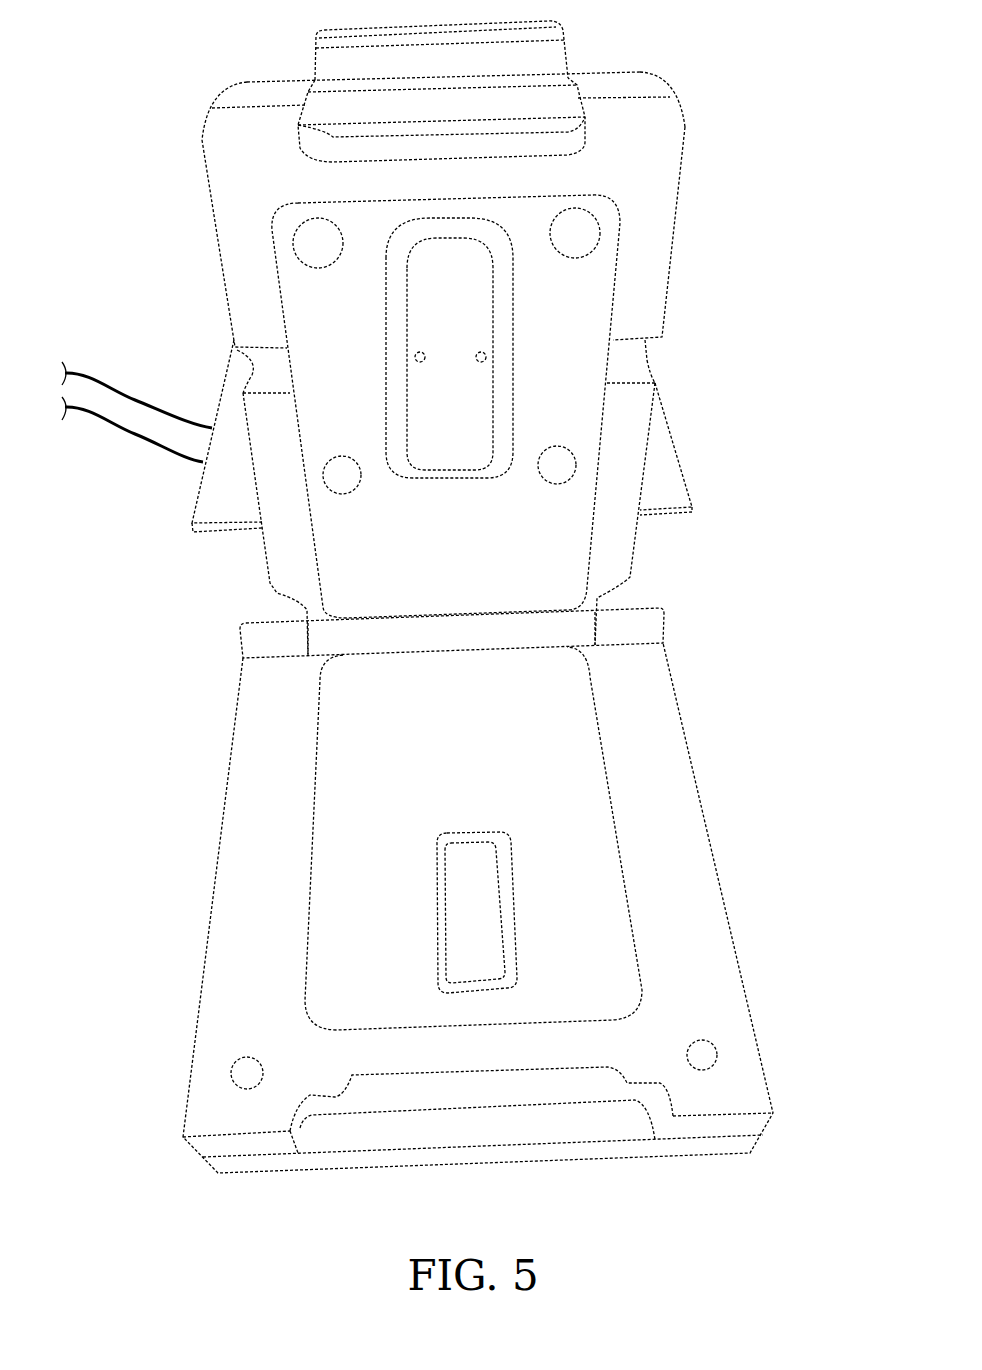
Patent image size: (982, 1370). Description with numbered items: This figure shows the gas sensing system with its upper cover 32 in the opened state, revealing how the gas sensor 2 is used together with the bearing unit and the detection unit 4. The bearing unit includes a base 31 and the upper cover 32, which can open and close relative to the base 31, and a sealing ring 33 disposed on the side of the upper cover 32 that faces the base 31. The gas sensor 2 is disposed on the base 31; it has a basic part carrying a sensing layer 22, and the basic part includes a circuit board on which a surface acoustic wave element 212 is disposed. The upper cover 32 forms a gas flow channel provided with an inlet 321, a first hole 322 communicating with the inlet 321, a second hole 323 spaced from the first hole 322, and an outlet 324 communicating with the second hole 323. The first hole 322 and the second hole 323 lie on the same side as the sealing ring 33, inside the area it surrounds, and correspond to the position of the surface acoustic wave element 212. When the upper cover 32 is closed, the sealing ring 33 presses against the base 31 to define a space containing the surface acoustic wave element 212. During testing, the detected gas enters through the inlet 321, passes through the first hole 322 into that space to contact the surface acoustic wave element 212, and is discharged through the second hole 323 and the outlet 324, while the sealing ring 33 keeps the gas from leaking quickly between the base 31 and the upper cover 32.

The gas sensor 2 is at (313, 740).
The sensing layer 22 is at (446, 963).
The surface acoustic wave element 212 is at (511, 967).
The base 31 is at (688, 713).
The upper cover 32 is at (690, 100).
The sealing ring 33 is at (510, 305).
The inlet 321 is at (258, 380).
The first hole 322 is at (415, 356).
The second hole 323 is at (486, 356).
The outlet 324 is at (641, 357).
The detection unit 4 is at (175, 527).